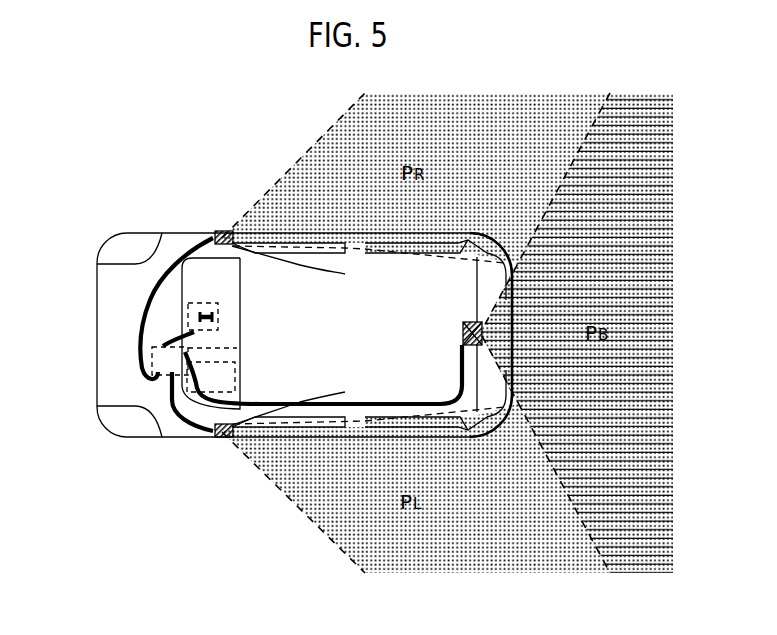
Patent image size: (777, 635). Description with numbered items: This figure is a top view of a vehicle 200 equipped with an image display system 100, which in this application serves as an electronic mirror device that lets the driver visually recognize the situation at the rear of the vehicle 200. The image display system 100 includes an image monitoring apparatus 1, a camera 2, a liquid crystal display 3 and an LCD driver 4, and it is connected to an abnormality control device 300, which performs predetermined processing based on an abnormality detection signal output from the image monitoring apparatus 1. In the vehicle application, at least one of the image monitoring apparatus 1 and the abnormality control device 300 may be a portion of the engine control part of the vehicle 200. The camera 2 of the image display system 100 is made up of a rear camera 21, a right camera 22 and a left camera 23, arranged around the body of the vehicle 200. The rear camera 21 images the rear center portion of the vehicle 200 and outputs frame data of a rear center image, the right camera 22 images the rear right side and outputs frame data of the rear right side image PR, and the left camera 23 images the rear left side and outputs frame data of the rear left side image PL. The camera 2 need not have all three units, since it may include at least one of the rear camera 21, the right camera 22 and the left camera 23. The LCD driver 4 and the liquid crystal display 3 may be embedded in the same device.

The image display system 100 is at (126, 318).
The vehicle 200 is at (158, 236).
The image monitoring apparatus 1 is at (237, 345).
The camera 2 is at (343, 288).
The liquid crystal display 3 is at (222, 303).
The LCD driver 4 is at (197, 297).
The rear camera 21 is at (463, 324).
The right camera 22 is at (345, 274).
The left camera 23 is at (345, 392).
The abnormality control device 300 is at (238, 372).